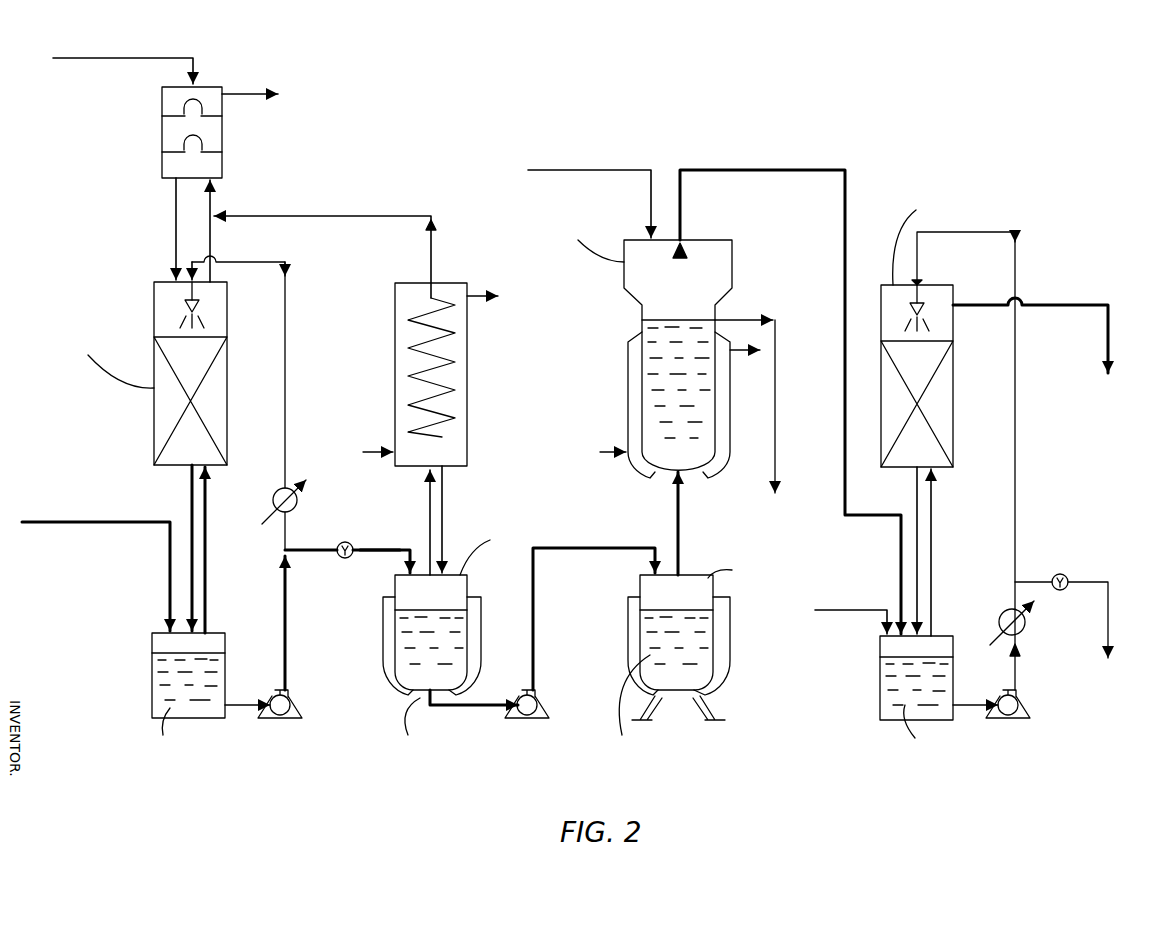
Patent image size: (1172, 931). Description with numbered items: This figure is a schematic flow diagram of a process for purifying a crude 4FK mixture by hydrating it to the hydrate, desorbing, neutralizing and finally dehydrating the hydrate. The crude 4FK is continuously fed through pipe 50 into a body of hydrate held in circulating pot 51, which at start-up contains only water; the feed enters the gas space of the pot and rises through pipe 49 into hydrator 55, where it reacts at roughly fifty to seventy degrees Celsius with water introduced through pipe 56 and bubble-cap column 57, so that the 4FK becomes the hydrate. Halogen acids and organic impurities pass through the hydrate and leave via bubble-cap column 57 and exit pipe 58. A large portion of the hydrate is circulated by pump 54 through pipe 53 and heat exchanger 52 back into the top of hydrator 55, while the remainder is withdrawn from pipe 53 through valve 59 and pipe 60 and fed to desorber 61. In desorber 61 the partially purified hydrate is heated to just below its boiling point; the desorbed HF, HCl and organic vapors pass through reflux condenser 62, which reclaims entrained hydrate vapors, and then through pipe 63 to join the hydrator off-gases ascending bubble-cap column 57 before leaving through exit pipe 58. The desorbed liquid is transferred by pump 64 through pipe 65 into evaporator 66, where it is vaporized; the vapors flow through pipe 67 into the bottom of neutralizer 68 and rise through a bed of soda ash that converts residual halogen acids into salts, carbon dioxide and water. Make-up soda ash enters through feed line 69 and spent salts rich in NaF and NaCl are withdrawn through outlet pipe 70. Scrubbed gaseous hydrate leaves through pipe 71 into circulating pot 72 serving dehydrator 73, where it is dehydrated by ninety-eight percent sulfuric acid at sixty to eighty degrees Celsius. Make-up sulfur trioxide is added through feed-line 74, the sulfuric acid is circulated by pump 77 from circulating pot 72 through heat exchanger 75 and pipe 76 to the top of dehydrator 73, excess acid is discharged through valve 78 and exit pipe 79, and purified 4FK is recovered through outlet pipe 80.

The pipe 49 is at (207, 578).
The pipe 50 is at (100, 524).
The circulating pot 51 is at (152, 672).
The heat exchanger 52 is at (274, 494).
The pipe 53 is at (287, 350).
The pump 54 is at (292, 700).
The hydrator 55 is at (227, 352).
The pipe 56 is at (140, 58).
The bubble-cap column 57 is at (222, 128).
The exit pipe 58 is at (238, 92).
The valve 59 is at (342, 542).
The pipe 60 is at (385, 549).
The desorber 61 is at (383, 647).
The reflux condenser 62 is at (468, 352).
The pipe 63 is at (433, 270).
The pump 64 is at (539, 700).
The pipe 65 is at (593, 548).
The evaporator 66 is at (730, 642).
The pipe 67 is at (682, 525).
The neutralizer 68 is at (628, 352).
The feed line 69 is at (612, 168).
The outlet pipe 70 is at (777, 395).
The pipe 71 is at (763, 168).
The circulating pot 72 is at (880, 680).
The dehydrator 73 is at (953, 352).
The feed-line 74 is at (842, 614).
The heat exchanger 75 is at (1000, 616).
The pipe 76 is at (1017, 415).
The pump 77 is at (1020, 700).
The valve 78 is at (1068, 576).
The exit pipe 79 is at (1110, 626).
The outlet pipe 80 is at (1060, 305).